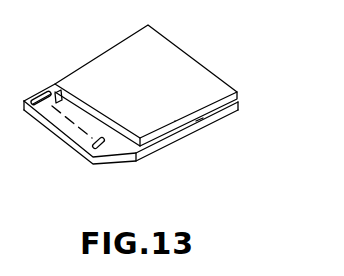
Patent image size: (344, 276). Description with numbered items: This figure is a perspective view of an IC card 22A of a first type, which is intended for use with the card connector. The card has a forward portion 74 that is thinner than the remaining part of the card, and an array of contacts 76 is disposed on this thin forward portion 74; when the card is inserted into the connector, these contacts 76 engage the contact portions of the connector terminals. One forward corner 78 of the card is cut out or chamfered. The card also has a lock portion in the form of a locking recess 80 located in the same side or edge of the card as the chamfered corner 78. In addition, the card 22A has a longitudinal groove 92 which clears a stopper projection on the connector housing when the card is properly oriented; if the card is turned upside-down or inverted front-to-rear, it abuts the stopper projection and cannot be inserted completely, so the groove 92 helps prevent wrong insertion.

The IC card 22A is at (170, 53).
The longitudinal groove 92 is at (175, 121).
The array of contacts 76 is at (44, 89).
The locking recess 80 is at (200, 122).
The forward portion 74 is at (85, 133).
The chamfered corner 78 is at (112, 164).